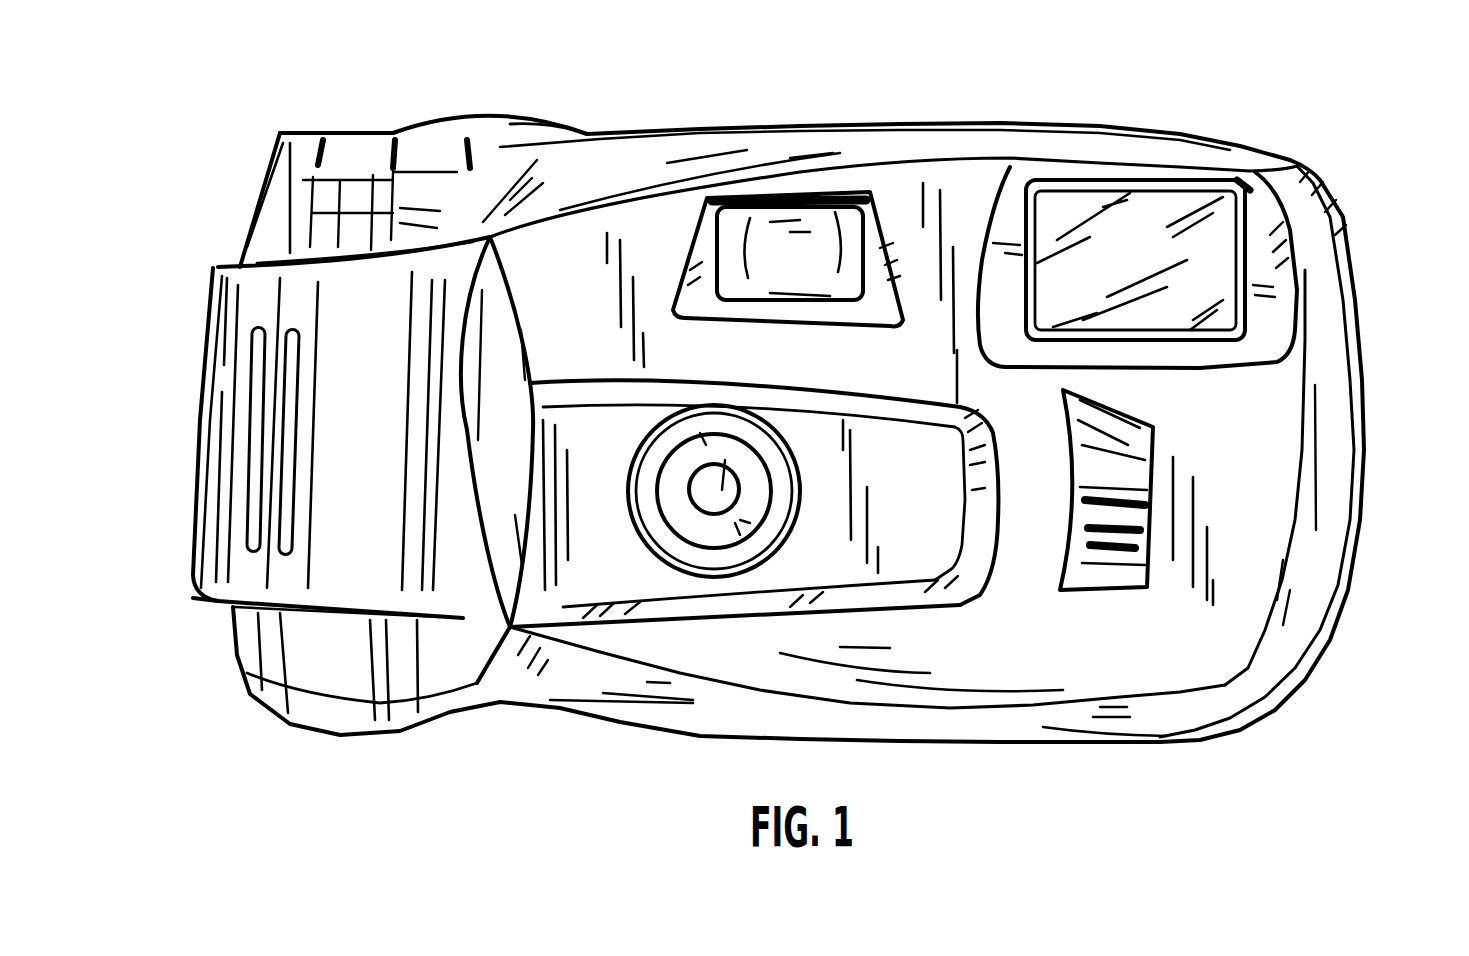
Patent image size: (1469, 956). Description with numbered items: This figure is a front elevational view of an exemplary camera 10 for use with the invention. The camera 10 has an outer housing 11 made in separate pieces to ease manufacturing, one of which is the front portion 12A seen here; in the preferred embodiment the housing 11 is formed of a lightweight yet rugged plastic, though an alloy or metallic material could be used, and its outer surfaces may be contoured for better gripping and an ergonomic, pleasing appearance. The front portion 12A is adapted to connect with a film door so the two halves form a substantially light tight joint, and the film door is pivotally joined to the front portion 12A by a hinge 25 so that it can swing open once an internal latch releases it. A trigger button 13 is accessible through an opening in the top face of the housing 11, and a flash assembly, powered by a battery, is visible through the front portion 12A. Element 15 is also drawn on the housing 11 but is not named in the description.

The camera 10 is at (1368, 95).
The outer housing 11 is at (1343, 587).
The front portion 12A is at (1187, 712).
The trigger button 13 is at (487, 118).
The flash unit 15 is at (1253, 327).
The hinge 25 is at (197, 412).